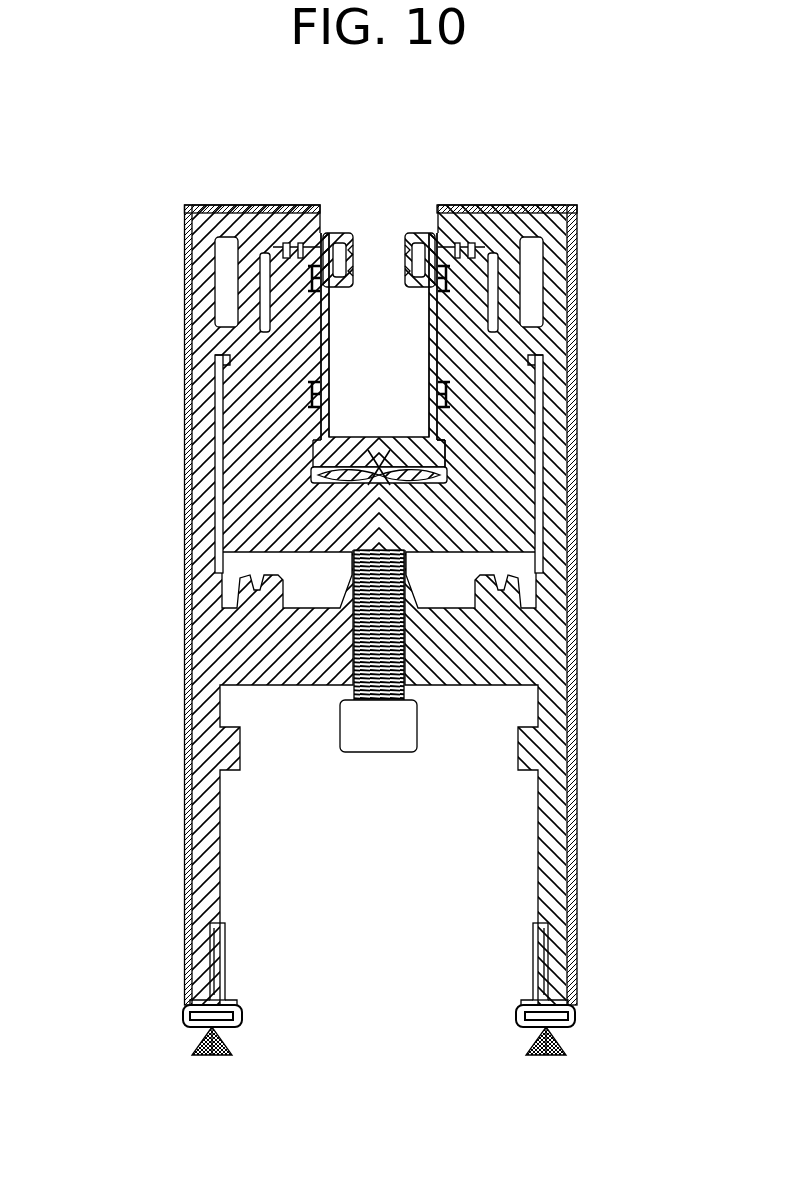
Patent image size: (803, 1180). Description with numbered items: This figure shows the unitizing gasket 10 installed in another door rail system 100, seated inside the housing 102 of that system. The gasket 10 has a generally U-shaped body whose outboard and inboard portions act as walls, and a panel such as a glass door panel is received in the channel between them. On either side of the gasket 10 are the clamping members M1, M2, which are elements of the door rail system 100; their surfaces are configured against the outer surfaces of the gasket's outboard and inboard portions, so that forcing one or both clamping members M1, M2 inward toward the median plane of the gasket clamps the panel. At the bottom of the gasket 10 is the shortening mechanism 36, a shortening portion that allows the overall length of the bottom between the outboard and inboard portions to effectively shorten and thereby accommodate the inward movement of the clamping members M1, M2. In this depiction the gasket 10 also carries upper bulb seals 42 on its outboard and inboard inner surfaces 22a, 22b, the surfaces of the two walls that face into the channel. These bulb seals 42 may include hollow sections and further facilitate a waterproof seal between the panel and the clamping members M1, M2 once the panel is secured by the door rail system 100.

The gasket 10 is at (320, 325).
The upper bulb seals 42 is at (333, 232).
The clamping member M1 is at (290, 477).
The clamping member M2 is at (470, 477).
The inner surface 22a is at (333, 362).
The inner surface 22b is at (415, 397).
The door rail system 100 is at (150, 470).
The housing 102 is at (182, 557).
The shortening mechanism 36 is at (377, 487).